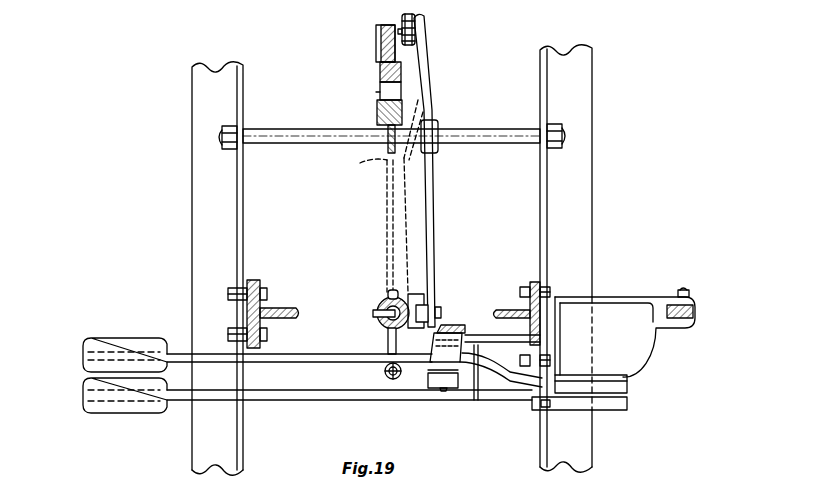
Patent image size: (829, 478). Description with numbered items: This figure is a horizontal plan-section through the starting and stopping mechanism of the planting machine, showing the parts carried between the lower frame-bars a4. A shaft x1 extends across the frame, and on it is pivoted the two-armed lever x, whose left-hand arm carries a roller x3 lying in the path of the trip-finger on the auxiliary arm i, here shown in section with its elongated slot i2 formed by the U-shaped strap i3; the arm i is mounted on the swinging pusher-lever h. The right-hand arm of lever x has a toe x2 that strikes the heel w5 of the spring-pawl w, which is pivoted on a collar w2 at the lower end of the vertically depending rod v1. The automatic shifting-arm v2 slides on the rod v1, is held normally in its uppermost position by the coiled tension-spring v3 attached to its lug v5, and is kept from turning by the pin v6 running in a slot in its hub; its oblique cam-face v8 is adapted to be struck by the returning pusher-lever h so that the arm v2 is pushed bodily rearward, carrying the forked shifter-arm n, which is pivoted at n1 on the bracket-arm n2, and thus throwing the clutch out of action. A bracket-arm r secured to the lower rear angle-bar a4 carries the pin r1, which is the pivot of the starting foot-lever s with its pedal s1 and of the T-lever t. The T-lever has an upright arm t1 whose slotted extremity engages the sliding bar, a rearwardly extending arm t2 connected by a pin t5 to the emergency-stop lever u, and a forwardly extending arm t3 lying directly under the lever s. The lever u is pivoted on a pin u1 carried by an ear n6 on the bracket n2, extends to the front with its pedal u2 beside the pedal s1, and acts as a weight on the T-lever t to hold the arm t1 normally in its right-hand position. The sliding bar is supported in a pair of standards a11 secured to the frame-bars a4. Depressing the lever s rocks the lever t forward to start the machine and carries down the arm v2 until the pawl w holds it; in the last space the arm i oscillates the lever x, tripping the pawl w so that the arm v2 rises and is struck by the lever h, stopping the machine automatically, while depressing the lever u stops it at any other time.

The lower frame-bar a4 is at (203, 262).
The shaft x1 is at (470, 132).
The auxiliary arm i is at (380, 70).
The elongated slot i2 is at (380, 92).
The U-shaped strap i3 is at (381, 116).
The roller x3 is at (402, 22).
The two-armed lever x is at (431, 108).
The pusher-lever h is at (412, 122).
The oblique cam-face v8 is at (364, 164).
The automatic shifting-arm v2 is at (387, 232).
The vertically depending rod v1 is at (381, 301).
The pin v6 is at (373, 313).
The lug v5 is at (388, 341).
The collar w2 is at (418, 294).
The spring-pawl w is at (434, 305).
The heel w5 is at (441, 312).
The toe x2 is at (440, 313).
The upright arm t1 is at (453, 331).
The T-lever t is at (432, 351).
The foot-lever s is at (306, 354).
The pedal s1 is at (120, 340).
The emergency-stop lever u is at (316, 401).
The pedal u2 is at (101, 408).
The rearwardly extending arm t2 is at (500, 372).
The forwardly extending arm t3 is at (428, 377).
The pin r1 is at (444, 392).
The bracket-arm r is at (476, 401).
The coiled tension-spring v3 is at (385, 372).
The standards a11 is at (281, 310).
The bracket-arm n2 is at (638, 348).
The forked shifter-arm n is at (696, 312).
The pivot n1 is at (686, 295).
The ear n6 is at (628, 384).
The pin u1 is at (612, 411).
The pin t5 is at (544, 407).